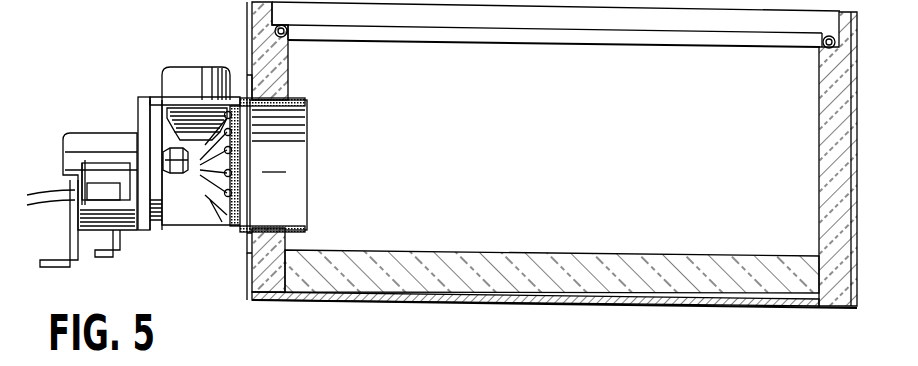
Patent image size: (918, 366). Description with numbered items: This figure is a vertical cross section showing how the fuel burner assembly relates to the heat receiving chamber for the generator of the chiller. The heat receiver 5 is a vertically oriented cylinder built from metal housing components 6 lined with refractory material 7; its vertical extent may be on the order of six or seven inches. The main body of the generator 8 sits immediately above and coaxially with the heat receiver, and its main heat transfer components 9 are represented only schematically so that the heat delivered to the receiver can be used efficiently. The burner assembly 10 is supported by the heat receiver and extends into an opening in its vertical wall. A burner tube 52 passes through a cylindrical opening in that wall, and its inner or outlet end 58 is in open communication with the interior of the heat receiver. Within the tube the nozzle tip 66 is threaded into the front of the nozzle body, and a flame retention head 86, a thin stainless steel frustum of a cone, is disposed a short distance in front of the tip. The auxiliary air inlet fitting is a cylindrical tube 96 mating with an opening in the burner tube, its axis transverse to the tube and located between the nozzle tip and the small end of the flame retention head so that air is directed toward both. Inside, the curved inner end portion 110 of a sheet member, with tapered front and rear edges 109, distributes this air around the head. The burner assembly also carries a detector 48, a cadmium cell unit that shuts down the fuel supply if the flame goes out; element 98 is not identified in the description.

The heat receiver 5 is at (534, 165).
The metal housing components 6 is at (250, 275).
The refractory material 7 is at (312, 280).
The generator 8 is at (252, 27).
The heat transfer components 9 is at (446, 47).
The burner assembly 10 is at (101, 131).
The detector 48 is at (102, 192).
The burner tube 52 is at (274, 162).
The outlet end of the burner tube 58 is at (288, 165).
The nozzle tip 66 is at (186, 172).
The flame retention head 86 is at (244, 190).
The tube 96 is at (160, 80).
The element 98 is at (726, 365).
The tapered front and rear edges 109 is at (658, 365).
The inner end portion of the sheet member 110 is at (165, 115).